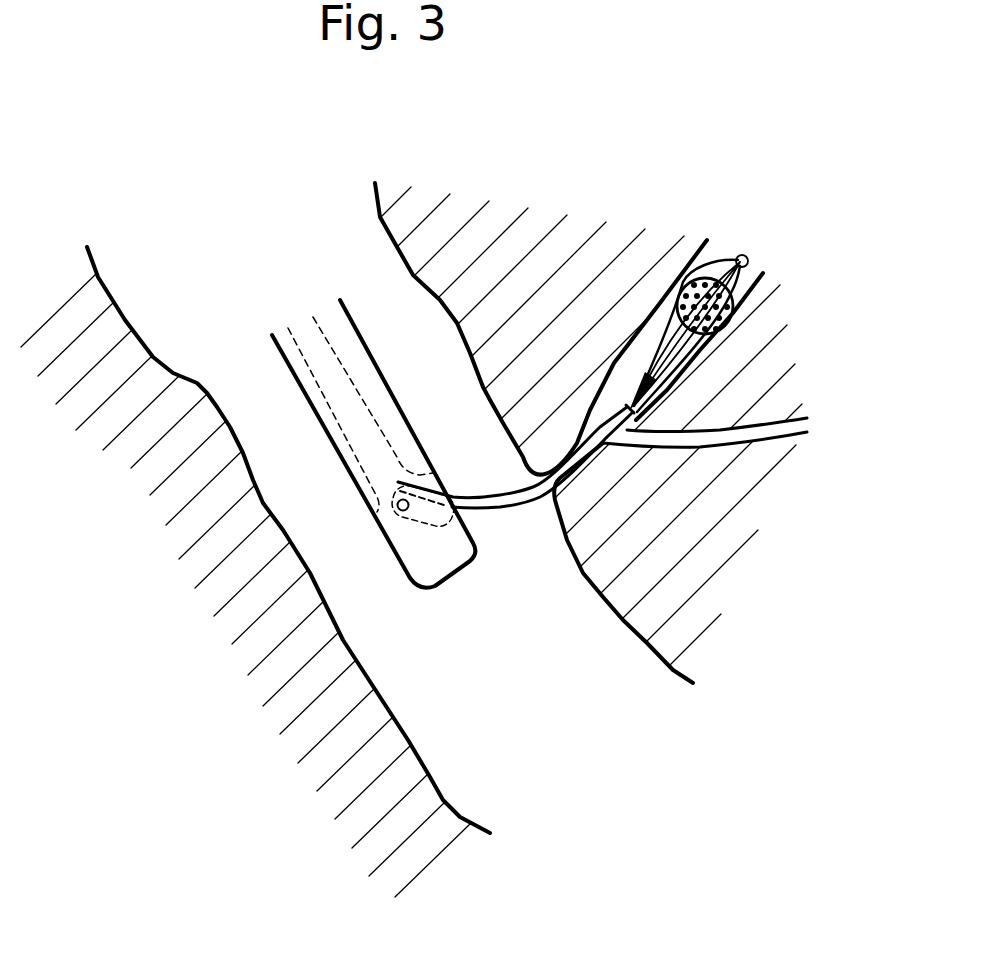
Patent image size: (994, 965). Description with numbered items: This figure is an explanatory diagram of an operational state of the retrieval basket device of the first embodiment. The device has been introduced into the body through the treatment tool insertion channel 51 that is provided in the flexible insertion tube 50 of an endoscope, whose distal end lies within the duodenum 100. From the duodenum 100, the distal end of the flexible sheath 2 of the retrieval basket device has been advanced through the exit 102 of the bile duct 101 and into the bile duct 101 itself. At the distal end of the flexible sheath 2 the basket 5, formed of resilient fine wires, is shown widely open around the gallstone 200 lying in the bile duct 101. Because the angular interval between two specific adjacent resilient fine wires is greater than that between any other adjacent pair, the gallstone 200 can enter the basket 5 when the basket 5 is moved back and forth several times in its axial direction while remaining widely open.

The duodenum 100 is at (283, 537).
The bile duct 101 is at (690, 267).
The exit of the bile duct 102 is at (560, 465).
The flexible insertion tube 50 is at (462, 590).
The treatment tool insertion channel 51 is at (325, 405).
The flexible sheath 2 is at (503, 508).
The basket 5 is at (658, 292).
The gallstone 200 is at (731, 292).